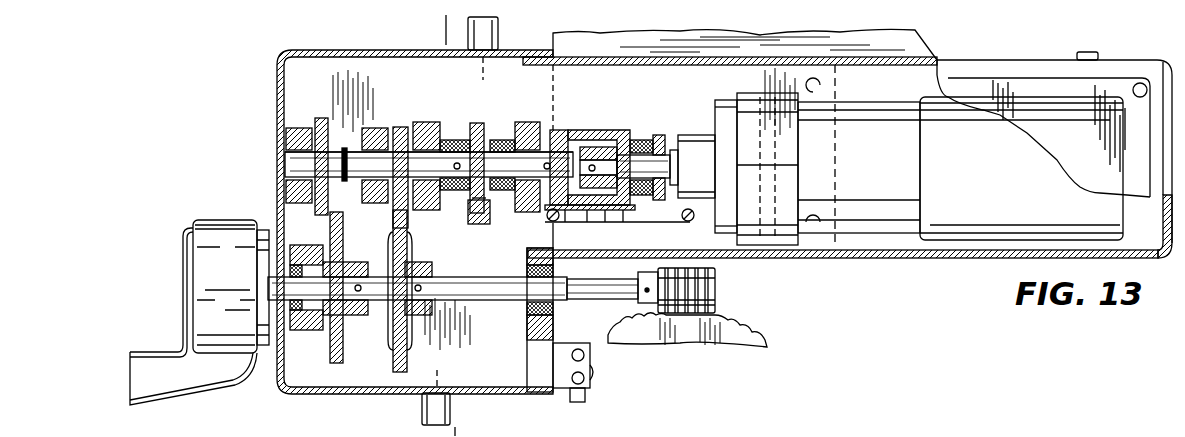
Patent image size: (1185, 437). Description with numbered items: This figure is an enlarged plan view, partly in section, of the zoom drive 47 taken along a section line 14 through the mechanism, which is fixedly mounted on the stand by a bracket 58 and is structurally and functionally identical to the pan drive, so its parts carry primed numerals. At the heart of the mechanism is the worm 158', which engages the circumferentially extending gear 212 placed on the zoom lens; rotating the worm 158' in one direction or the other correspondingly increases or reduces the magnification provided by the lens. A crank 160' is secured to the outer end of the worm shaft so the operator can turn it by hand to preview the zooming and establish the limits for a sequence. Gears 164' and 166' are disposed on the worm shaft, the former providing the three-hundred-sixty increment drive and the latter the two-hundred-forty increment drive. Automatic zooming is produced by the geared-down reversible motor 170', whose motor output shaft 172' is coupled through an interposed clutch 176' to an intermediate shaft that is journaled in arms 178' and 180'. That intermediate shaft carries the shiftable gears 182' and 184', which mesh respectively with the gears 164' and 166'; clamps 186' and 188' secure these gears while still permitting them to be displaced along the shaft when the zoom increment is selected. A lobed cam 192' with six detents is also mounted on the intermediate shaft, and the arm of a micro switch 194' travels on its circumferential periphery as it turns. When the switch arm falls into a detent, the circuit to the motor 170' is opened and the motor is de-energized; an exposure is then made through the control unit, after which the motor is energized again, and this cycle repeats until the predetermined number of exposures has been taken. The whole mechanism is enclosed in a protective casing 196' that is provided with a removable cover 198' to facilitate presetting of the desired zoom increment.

The section line 14 is at (440, 30).
The zoom drive 47 is at (246, 171).
The bracket 58 is at (835, 57).
The worm 158' is at (621, 325).
The crank 160' is at (199, 317).
The gear 164' is at (419, 291).
The gear 166' is at (359, 294).
The geared-down reversible motor 170' is at (1021, 194).
The motor output shaft 172' is at (647, 149).
The clutch 176' is at (619, 156).
The arm 178' is at (520, 150).
The arm 180' is at (441, 148).
The shiftable gear 182' is at (406, 145).
The shiftable gear 184' is at (314, 154).
The clamp 186' is at (381, 148).
The clamp 188' is at (270, 158).
The lobed cam 192' is at (481, 149).
The micro switch 194' is at (690, 316).
The protective casing 196' is at (799, 179).
The removable cover 198' is at (415, 226).
The gear 212 is at (648, 340).